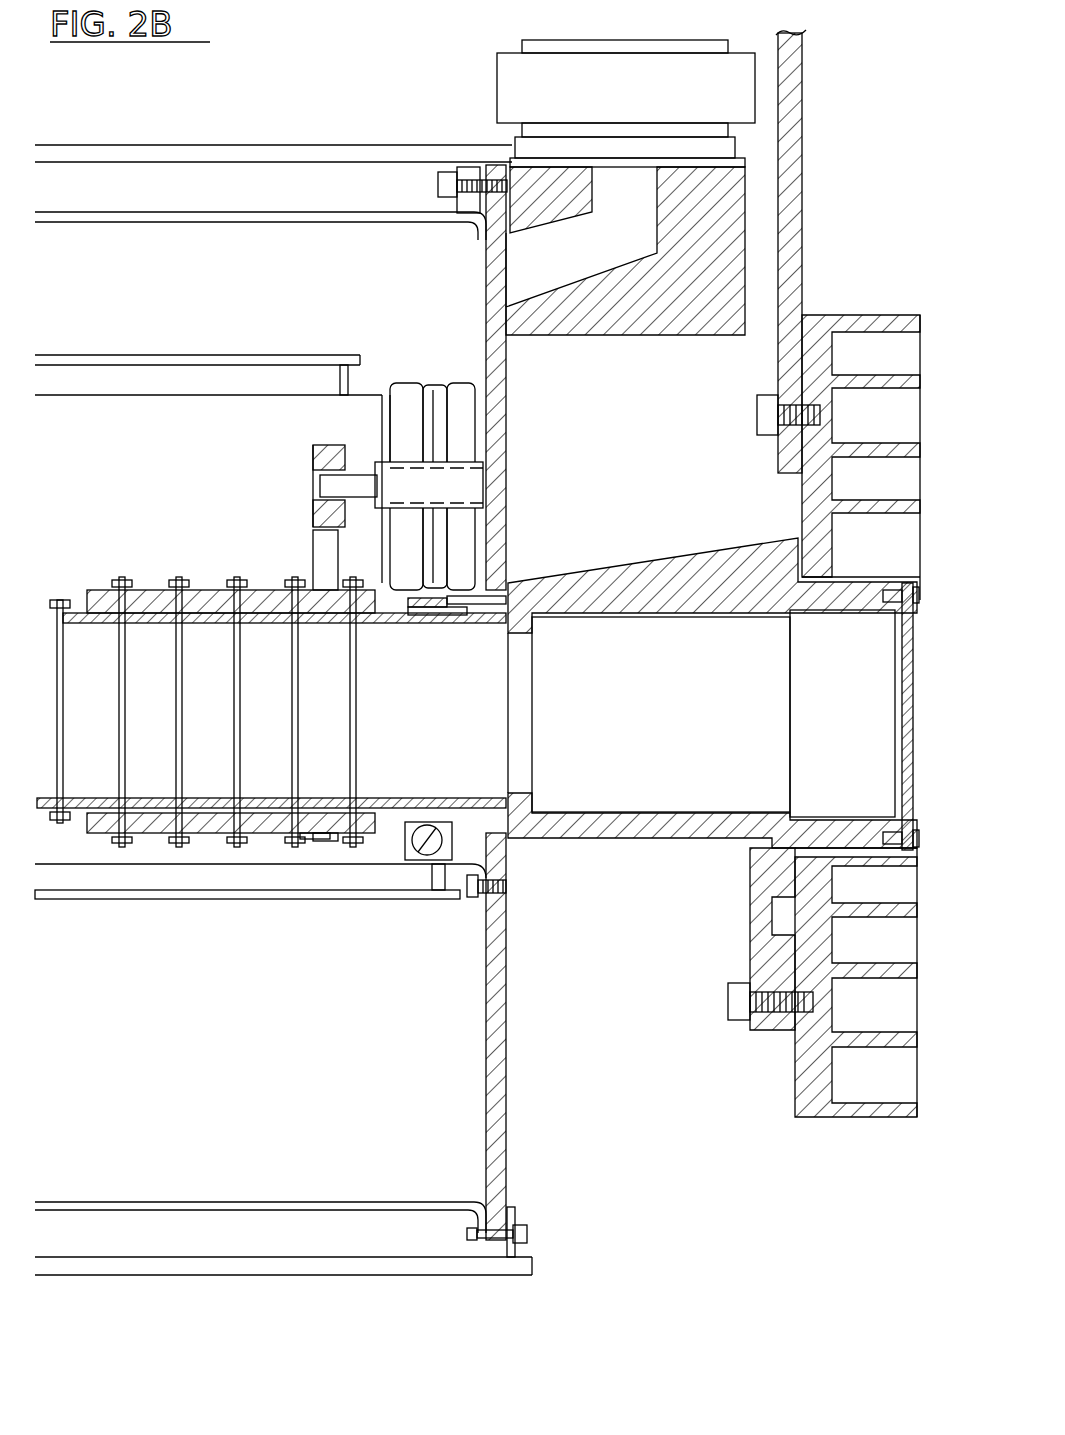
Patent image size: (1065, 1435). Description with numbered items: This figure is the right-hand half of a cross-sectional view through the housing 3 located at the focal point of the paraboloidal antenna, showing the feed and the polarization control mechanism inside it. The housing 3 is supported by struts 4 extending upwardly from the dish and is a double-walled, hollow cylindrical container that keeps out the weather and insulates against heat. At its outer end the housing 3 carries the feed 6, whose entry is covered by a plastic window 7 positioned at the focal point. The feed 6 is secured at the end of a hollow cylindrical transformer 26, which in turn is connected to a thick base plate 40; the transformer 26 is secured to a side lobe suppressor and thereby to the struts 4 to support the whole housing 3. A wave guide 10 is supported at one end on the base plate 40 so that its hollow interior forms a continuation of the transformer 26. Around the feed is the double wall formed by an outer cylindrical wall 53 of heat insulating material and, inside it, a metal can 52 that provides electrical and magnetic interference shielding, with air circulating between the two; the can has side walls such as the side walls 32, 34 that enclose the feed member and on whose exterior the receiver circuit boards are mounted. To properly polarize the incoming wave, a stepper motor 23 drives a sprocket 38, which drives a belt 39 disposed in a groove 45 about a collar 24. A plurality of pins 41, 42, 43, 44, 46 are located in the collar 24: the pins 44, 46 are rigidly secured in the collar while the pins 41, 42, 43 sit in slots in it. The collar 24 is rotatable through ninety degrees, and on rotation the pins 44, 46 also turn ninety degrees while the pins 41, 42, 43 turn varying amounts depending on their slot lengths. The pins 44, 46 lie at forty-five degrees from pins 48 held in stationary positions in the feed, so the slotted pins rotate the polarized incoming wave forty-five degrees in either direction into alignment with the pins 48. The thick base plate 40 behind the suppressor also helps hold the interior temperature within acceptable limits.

The housing 3 is at (313, 112).
The struts 4 is at (801, 170).
The feed 6 is at (855, 740).
The plastic window 7 is at (914, 726).
The wave guide 10 is at (455, 777).
The stepper motor 23 is at (398, 385).
The collar 24 is at (840, 317).
The hollow cylindrical transformer 26 is at (663, 568).
The side wall 32 is at (357, 863).
The side wall 34 is at (258, 402).
The sprocket 38 is at (320, 448).
The belt 39 is at (313, 566).
The base plate 40 is at (507, 992).
The pin 41 is at (125, 728).
The pin 42 is at (182, 728).
The pin 43 is at (240, 728).
The pin 44 is at (298, 728).
The groove 45 is at (313, 838).
The pin 46 is at (356, 728).
The stationary pins 48 is at (78, 600).
The metal can 52 is at (243, 1202).
The outer cylindrical metal wall 53 is at (273, 1267).